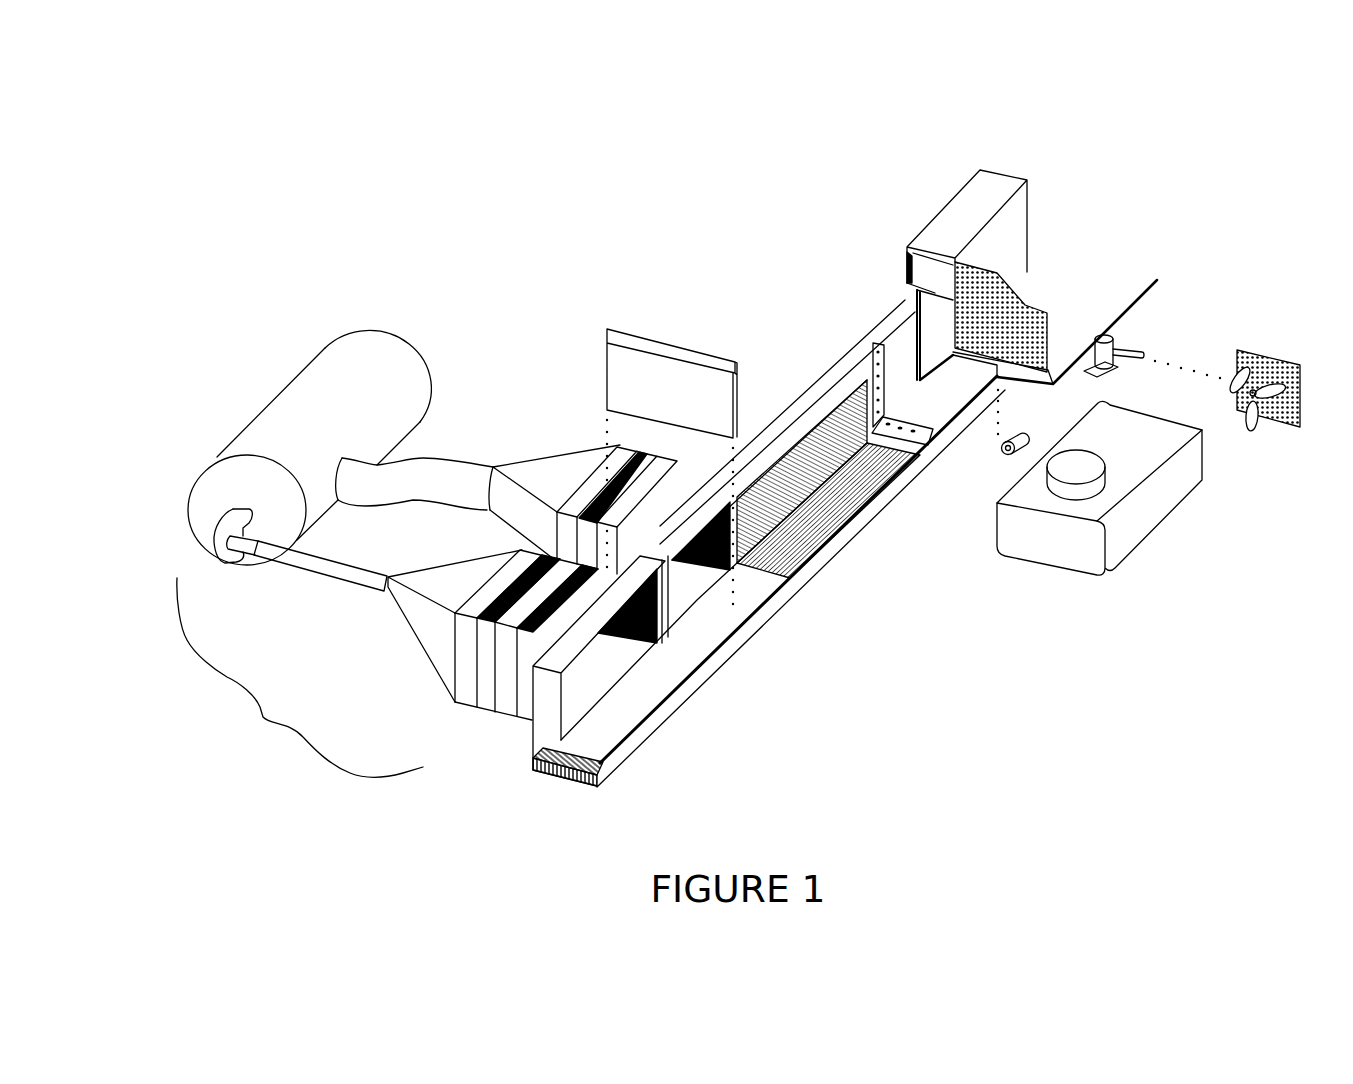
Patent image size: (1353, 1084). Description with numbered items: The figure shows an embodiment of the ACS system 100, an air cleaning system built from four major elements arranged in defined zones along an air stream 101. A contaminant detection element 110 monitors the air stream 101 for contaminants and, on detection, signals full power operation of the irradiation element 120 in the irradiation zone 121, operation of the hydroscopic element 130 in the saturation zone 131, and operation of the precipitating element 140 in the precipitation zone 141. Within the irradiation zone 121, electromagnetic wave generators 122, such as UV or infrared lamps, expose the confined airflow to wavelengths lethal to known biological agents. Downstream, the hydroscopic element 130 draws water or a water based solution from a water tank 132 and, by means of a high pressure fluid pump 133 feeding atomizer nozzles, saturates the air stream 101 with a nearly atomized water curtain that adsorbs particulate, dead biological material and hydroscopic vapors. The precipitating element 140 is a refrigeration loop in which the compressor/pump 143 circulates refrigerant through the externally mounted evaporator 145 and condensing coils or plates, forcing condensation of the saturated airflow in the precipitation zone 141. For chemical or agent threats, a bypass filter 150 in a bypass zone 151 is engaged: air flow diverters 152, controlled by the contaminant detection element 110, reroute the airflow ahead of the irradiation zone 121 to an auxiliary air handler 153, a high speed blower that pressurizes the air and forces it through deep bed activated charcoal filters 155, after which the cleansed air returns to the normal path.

The ACS system 100 is at (545, 210).
The air stream 101 is at (713, 617).
The contaminant detection element 110 is at (580, 777).
The irradiation element 120 is at (857, 490).
The irradiation zone 121 is at (739, 414).
The electromagnetic wave generators 122 is at (822, 547).
The hydroscopic element 130 is at (927, 447).
The saturation zone 131 is at (733, 445).
The water tank 132 is at (1092, 568).
The high pressure fluid pump 133 is at (1015, 432).
The precipitating element 140 is at (1032, 250).
The precipitation zone 141 is at (985, 180).
The compressor/pump 143 is at (1115, 340).
The evaporator 145 is at (1248, 432).
The bypass filter 150 is at (373, 628).
The bypass zone 151 is at (300, 677).
The air flow diverters 152 is at (608, 478).
The auxiliary air handler 153 is at (227, 556).
The deep bed activated charcoal filters 155 is at (316, 382).